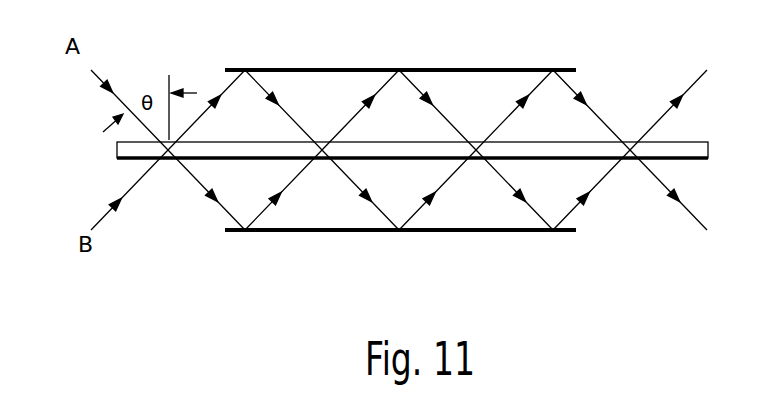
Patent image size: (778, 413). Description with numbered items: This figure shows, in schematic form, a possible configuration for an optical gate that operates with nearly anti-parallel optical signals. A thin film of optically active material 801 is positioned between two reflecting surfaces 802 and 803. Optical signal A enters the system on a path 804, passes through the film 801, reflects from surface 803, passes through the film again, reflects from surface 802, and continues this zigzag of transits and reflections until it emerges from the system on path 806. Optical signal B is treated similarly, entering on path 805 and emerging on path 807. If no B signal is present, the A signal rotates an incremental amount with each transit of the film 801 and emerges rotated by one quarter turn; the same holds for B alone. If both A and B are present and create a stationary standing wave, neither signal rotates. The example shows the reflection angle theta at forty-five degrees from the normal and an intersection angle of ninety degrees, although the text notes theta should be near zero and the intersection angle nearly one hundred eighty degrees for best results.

The thin film of optically active material 801 is at (117, 150).
The reflecting surface 802 is at (345, 68).
The reflecting surface 803 is at (313, 232).
The path of optical signal A 804 is at (127, 106).
The path of optical signal B 805 is at (128, 192).
The emergence path of optical signal A 806 is at (701, 76).
The emergence path of optical signal B 807 is at (694, 217).